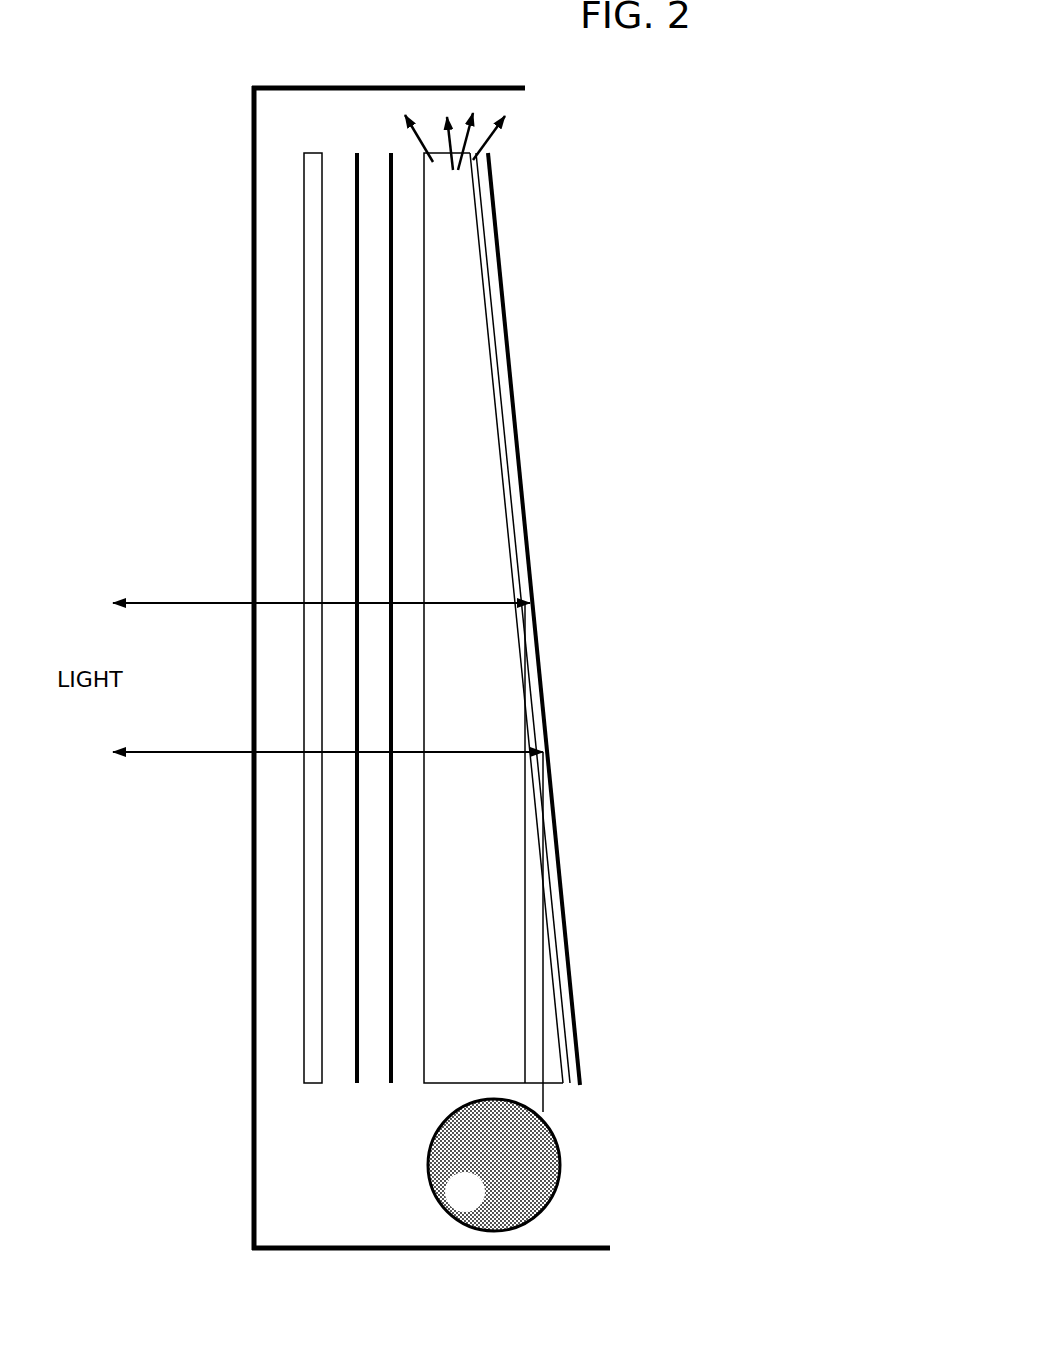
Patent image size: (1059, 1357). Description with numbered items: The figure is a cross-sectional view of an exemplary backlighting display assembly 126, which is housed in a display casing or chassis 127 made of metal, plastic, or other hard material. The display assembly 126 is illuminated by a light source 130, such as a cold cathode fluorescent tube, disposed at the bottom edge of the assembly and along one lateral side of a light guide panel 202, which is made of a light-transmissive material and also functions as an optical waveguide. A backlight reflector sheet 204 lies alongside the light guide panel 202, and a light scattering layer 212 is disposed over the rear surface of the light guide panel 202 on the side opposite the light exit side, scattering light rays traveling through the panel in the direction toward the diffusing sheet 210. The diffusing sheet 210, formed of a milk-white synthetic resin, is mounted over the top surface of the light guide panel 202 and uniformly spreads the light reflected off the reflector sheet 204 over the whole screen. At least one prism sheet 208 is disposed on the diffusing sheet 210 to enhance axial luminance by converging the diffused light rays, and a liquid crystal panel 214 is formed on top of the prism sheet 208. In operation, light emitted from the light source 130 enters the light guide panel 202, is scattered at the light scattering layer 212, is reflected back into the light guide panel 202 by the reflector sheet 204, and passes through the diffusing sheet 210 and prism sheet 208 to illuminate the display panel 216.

The display assembly 126 is at (240, 178).
The display casing or chassis 127 is at (365, 87).
The light source 130 is at (583, 1166).
The light guide panel 202 is at (477, 472).
The backlight reflector sheet 204 is at (528, 558).
The prism sheet 208 is at (340, 1098).
The diffusing sheet 210 is at (395, 1098).
The light scattering layer 212 is at (575, 1052).
The liquid crystal panel 214 is at (290, 585).
The display panel 216 is at (512, 123).